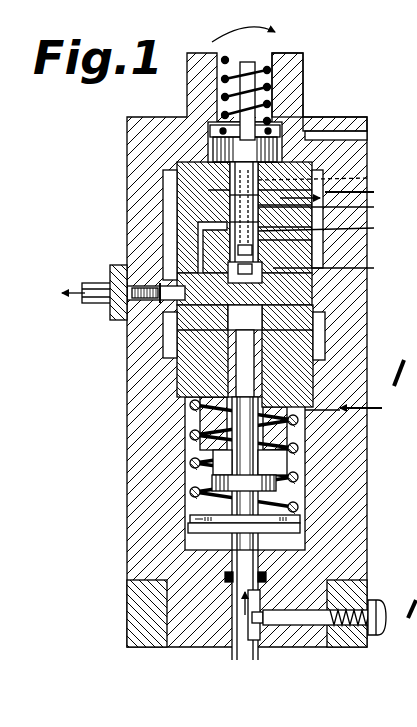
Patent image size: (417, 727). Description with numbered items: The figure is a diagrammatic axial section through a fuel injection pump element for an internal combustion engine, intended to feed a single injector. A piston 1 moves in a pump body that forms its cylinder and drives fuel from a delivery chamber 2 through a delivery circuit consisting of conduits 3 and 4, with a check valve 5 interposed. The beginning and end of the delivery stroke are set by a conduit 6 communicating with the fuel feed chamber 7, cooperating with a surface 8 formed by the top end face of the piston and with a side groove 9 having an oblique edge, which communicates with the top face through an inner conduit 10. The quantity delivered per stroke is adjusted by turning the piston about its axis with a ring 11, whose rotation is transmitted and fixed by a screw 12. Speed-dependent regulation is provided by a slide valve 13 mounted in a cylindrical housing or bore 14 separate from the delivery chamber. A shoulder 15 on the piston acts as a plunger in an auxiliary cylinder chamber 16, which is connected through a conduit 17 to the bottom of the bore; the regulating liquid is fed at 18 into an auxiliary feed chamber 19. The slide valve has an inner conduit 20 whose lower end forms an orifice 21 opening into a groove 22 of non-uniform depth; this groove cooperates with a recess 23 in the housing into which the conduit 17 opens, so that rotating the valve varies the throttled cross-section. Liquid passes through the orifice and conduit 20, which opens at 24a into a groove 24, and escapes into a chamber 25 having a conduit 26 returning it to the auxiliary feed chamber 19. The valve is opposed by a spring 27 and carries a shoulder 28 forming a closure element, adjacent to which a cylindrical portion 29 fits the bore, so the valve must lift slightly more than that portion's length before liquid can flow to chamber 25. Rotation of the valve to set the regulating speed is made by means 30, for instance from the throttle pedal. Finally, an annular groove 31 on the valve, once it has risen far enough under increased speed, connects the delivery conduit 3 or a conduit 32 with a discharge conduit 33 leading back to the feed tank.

The piston 1 is at (325, 331).
The delivery chamber 2 is at (312, 314).
The conduit 3 is at (185, 307).
The conduit 4 is at (112, 281).
The check valve 5 is at (115, 310).
The conduit 6 is at (205, 330).
The fuel feed chamber 7 is at (172, 336).
The surface 8 is at (245, 351).
The side groove 9 is at (300, 330).
The inner conduit 10 is at (250, 380).
The ring 11 is at (352, 648).
The screw 12 is at (310, 620).
The slide valve 13 is at (325, 209).
The cylindrical housing or bore 14 is at (325, 230).
The shoulder 15 is at (268, 483).
The auxiliary cylinder chamber 16 is at (263, 462).
The conduit 17 is at (318, 373).
The liquid feed 18 is at (350, 406).
The auxiliary feed chamber 19 is at (302, 440).
The inner conduit 20 is at (325, 181).
The orifice 21 is at (262, 268).
The groove 22 is at (263, 261).
The recess 23 is at (333, 269).
The groove 24 is at (240, 165).
The opening of conduit 20 24a is at (240, 190).
The chamber 25 is at (298, 94).
The conduit 26 is at (298, 134).
The spring 27 is at (268, 67).
The shoulder 28 is at (235, 151).
The cylindrical portion 29 is at (325, 167).
The adjusting means 30 is at (253, 60).
The annular groove 31 is at (245, 228).
The conduit 32 is at (270, 248).
The discharge conduit 33 is at (336, 196).